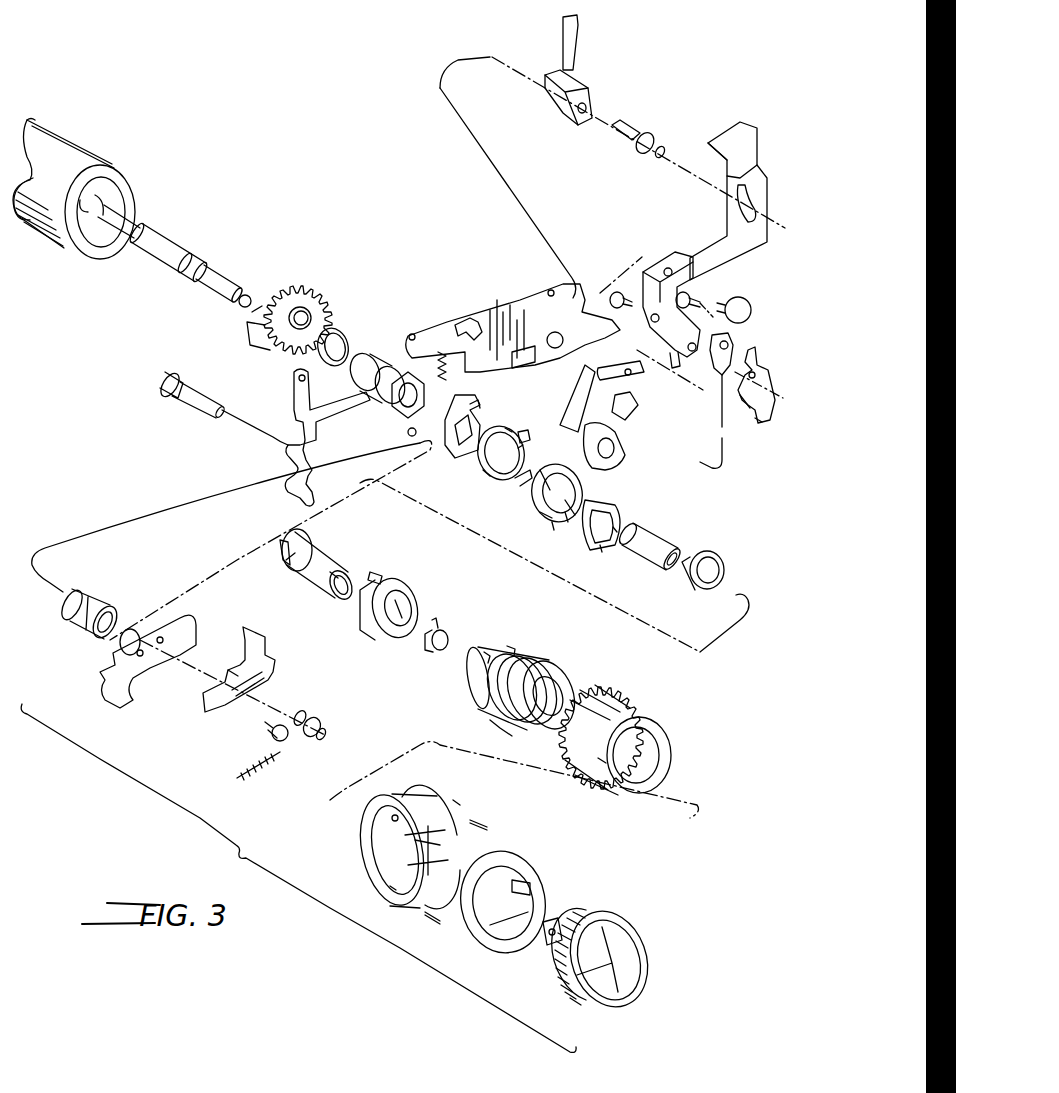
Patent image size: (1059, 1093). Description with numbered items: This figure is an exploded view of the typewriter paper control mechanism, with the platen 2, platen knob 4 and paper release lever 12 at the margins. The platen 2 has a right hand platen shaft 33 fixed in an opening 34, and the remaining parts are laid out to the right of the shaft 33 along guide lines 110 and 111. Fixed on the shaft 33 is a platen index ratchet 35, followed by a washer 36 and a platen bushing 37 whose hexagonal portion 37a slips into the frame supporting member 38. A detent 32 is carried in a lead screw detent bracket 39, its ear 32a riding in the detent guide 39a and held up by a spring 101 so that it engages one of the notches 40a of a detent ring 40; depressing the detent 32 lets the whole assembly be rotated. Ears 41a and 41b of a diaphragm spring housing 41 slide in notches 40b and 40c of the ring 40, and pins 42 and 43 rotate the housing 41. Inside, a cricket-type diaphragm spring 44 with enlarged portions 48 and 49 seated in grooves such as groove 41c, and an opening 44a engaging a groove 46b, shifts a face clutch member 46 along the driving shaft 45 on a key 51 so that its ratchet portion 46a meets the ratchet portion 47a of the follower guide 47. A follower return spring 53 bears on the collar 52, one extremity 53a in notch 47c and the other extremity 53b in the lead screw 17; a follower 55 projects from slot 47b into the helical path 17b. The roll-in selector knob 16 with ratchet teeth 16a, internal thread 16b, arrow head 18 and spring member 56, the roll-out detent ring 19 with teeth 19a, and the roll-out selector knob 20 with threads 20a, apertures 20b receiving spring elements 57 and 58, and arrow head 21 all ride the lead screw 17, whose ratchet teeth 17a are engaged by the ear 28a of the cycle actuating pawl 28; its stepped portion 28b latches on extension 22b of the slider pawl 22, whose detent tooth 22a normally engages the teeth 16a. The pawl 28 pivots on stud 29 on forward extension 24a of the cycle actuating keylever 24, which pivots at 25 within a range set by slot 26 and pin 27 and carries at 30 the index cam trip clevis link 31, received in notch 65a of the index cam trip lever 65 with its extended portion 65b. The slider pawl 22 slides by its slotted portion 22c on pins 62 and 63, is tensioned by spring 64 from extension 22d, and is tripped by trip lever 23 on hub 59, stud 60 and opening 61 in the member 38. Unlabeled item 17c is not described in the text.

The platen 2 is at (85, 138).
The platen knob 4 is at (625, 920).
The paper release lever 12 is at (578, 35).
The roll-in selector knob and ratchet assembly 16 is at (670, 752).
The ratchet teeth 16a is at (620, 700).
The internal threaded portion 16b is at (660, 772).
The indexing lead screw 17 is at (563, 680).
The ratchet teeth 17a is at (510, 648).
The helical guide path 17b is at (503, 730).
The drum lug 17c is at (486, 652).
The arrow head 18 is at (600, 760).
The roll-out detent ring 19 is at (528, 862).
The projecting teeth 19a is at (528, 912).
The roll-out selector knob 20 is at (428, 805).
The projecting threaded portions 20a is at (460, 860).
The apertures 20b is at (455, 805).
The arrow head 21 is at (393, 816).
The slider pawl 22 is at (270, 670).
The detent tooth 22a is at (230, 670).
The extension 22b is at (262, 640).
The slotted portion 22c is at (262, 678).
The extension 22d is at (208, 710).
The trip lever 23 is at (112, 705).
The cycle actuating keylever 24 is at (740, 135).
The forward extension 24a is at (648, 322).
The pivot 25 is at (745, 300).
The slot 26 is at (745, 212).
The pin 27 is at (662, 148).
The cycle actuating pawl 28 is at (758, 380).
The ear 28a is at (742, 402).
The stepped portion 28b is at (758, 422).
The stud 29 is at (620, 294).
The attachment point 30 is at (700, 302).
The index cam trip clevis link 31 is at (722, 462).
The detent 32 is at (462, 322).
The ear 32a is at (470, 322).
The right hand platen shaft 33 is at (178, 235).
The opening 34 is at (80, 200).
The platen index ratchet 35 is at (310, 290).
The washer 36 is at (343, 330).
The platen bushing 37 is at (392, 410).
The hexagonal shaped portion 37a is at (368, 352).
The frame supporting member 38 is at (284, 446).
The lead screw detent bracket 39 is at (450, 450).
The detent guide 39a is at (472, 402).
The detent ring 40 is at (482, 470).
The notches 40a is at (508, 428).
The notch 40b is at (483, 470).
The notch 40c is at (520, 446).
The diaphragm spring housing 41 is at (535, 515).
The ear 41a is at (518, 484).
The ear 41b is at (540, 512).
The groove 41c is at (565, 518).
The pin 42 is at (522, 447).
The pin 43 is at (550, 524).
The diaphragm spring 44 is at (612, 508).
The internally cut opening 44a is at (617, 528).
The driving shaft 45 is at (660, 538).
The face clutch member 46 is at (712, 555).
The face type ratchet portion 46a is at (722, 570).
The groove 46b is at (688, 578).
The follower guide member 47 is at (333, 540).
The ratchet portion 47a is at (280, 552).
The slot 47b is at (336, 574).
The notch 47c is at (286, 560).
The enlarged portion 48 is at (608, 448).
The enlarged portion 49 is at (598, 546).
The key 51 is at (665, 560).
The collar 52 is at (310, 540).
The follower return spring 53 is at (412, 592).
The extremity 53a is at (398, 625).
The extremity 53b is at (378, 574).
The follower 55 is at (440, 625).
The spring member 56 is at (662, 718).
The spring element 57 is at (483, 826).
The spring element 58 is at (428, 918).
The hub 59 is at (100, 598).
The stud 60 is at (200, 393).
The opening 61 is at (411, 438).
The pin 62 is at (283, 742).
The pin 63 is at (320, 742).
The spring 64 is at (258, 768).
The index cam trip lever 65 is at (630, 366).
The notch 65a is at (628, 378).
The extended portion 65b is at (583, 400).
The spring 101 is at (440, 352).
The guide line 110 is at (740, 625).
The guide line 111 is at (673, 820).